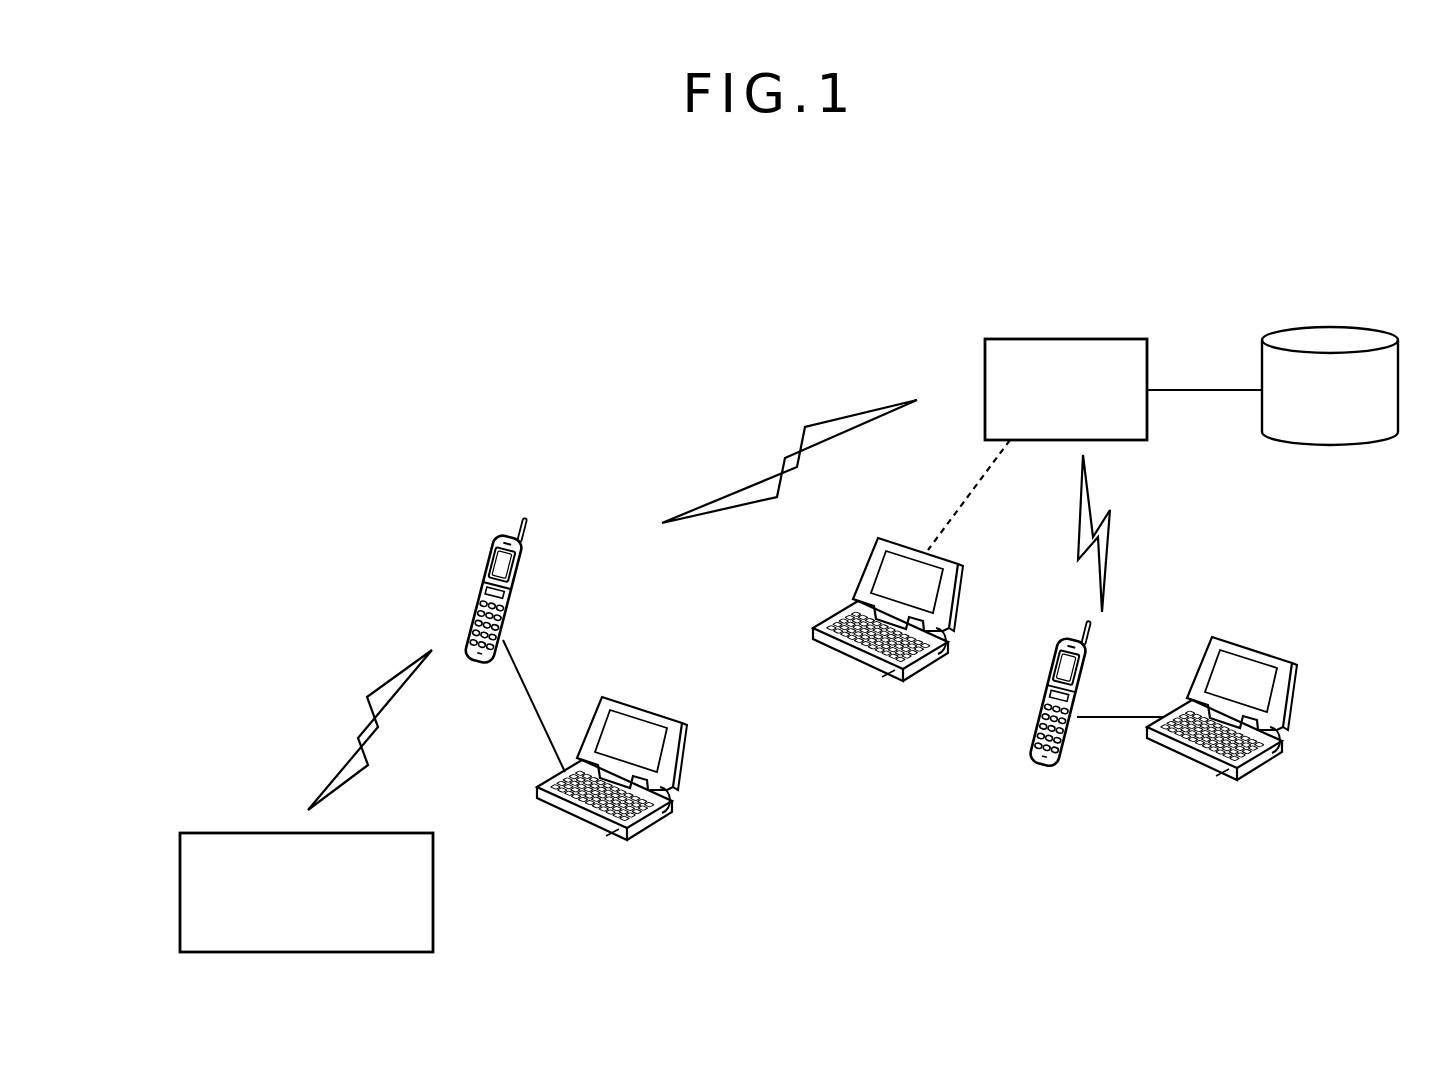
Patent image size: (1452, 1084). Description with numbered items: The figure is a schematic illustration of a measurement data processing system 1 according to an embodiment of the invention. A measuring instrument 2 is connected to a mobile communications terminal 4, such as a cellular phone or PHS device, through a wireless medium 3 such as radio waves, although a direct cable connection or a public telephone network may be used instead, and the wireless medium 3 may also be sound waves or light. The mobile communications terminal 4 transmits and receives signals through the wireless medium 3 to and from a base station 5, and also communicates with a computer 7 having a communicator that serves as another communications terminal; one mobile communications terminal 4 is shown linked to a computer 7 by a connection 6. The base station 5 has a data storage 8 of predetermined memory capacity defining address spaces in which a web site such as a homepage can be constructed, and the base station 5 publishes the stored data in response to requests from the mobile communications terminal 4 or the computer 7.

The measurement data processing system 1 is at (748, 359).
The measuring instrument 2 is at (209, 833).
The wireless medium 3 is at (410, 676).
The mobile communications terminal 4 is at (526, 574).
The base station 5 is at (1065, 339).
The wired connection line 6 is at (965, 507).
The computer 7 is at (662, 820).
The data storage 8 is at (1330, 327).